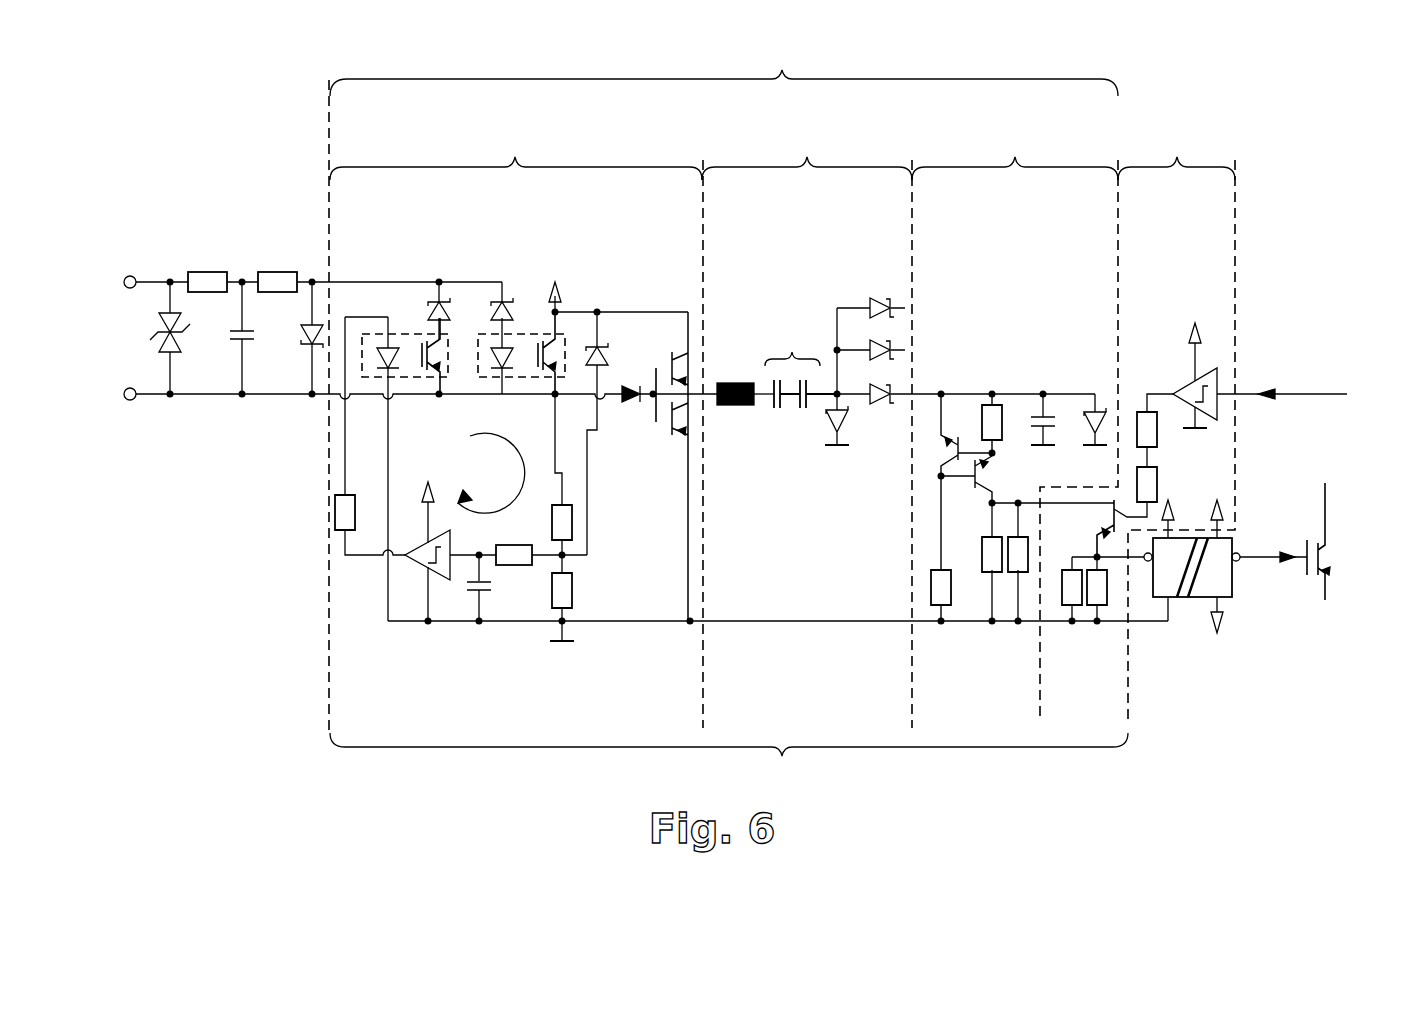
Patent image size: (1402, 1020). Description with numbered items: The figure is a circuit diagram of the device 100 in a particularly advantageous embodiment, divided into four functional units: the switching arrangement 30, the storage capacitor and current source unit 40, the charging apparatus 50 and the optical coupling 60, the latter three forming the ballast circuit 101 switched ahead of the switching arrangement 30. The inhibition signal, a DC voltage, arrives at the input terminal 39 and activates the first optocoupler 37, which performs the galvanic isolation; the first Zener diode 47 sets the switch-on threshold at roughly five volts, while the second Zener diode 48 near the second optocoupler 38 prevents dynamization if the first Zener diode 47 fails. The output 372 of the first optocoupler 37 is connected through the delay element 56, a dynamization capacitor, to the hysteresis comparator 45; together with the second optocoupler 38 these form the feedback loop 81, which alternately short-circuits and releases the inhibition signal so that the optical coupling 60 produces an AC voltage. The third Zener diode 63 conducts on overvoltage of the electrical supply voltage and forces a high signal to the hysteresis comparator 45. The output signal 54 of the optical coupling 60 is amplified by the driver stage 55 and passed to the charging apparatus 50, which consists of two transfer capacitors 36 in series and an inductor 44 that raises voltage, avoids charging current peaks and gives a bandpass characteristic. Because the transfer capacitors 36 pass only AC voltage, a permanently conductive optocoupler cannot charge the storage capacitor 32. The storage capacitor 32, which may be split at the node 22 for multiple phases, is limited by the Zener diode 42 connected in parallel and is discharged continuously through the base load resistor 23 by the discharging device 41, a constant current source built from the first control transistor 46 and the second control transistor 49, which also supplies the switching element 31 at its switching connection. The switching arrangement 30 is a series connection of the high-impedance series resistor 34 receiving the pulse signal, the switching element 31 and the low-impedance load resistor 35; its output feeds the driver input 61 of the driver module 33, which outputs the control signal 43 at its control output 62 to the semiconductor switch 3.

The semiconductor switch 3 is at (1340, 548).
The node 22 is at (835, 396).
The base load resistor 23 is at (1018, 555).
The switching arrangement 30 is at (1176, 146).
The switching element 31 is at (1108, 533).
The storage capacitor 32 is at (1036, 419).
The driver module 33 is at (1208, 580).
The high-impedance series resistor 34 is at (1157, 482).
The low-impedance load resistor 35 is at (1072, 585).
The transfer capacitor 36 is at (801, 365).
The first optocoupler 37 is at (525, 363).
The second optocoupler 38 is at (410, 363).
The input terminal 39 is at (126, 386).
The storage capacitor and current source unit 40 is at (1015, 146).
The discharging device 41 is at (938, 372).
The Zener diode 42 is at (1090, 410).
The control signal 43 is at (1268, 553).
The inductor 44 is at (730, 405).
The hysteresis comparator 45 is at (420, 562).
The first control transistor 46 is at (987, 480).
The first Zener diode 47 is at (496, 305).
The second Zener diode 48 is at (432, 304).
The second control transistor 49 is at (943, 455).
The charging apparatus 50 is at (807, 146).
The output signal 54 is at (632, 405).
The driver stage 55 is at (657, 446).
The delay element 56 is at (485, 592).
The optical coupling 60 is at (516, 146).
The driver input 61 is at (1149, 575).
The control output 62 is at (1240, 562).
The third Zener diode 63 is at (604, 345).
The feedback loop 81 is at (512, 462).
The device 100 is at (729, 761).
The ballast circuit 101 is at (724, 65).
The output of the first optocoupler 372 is at (560, 348).